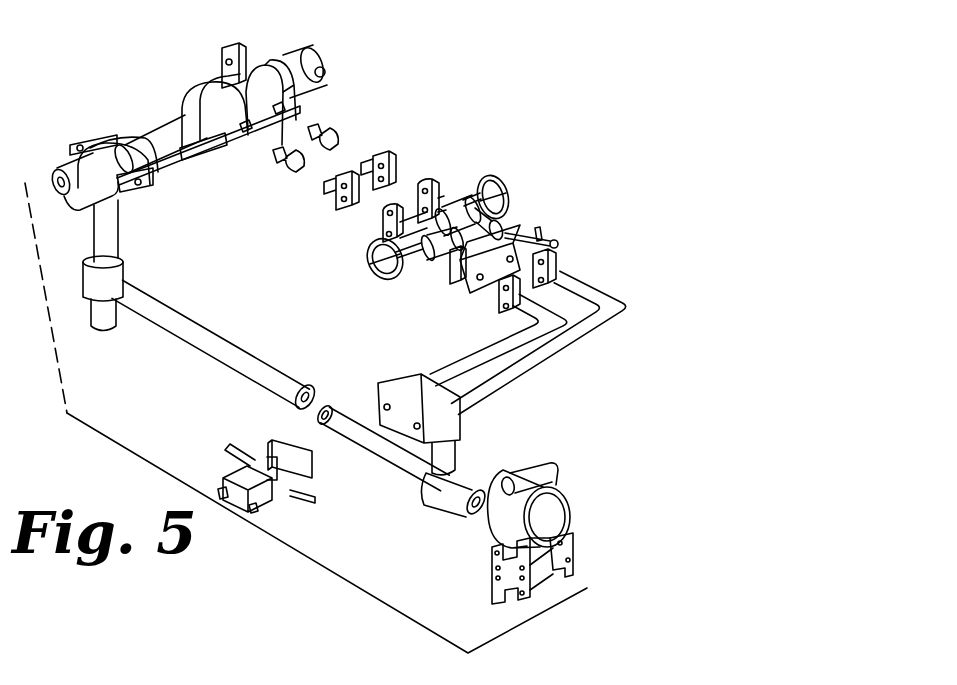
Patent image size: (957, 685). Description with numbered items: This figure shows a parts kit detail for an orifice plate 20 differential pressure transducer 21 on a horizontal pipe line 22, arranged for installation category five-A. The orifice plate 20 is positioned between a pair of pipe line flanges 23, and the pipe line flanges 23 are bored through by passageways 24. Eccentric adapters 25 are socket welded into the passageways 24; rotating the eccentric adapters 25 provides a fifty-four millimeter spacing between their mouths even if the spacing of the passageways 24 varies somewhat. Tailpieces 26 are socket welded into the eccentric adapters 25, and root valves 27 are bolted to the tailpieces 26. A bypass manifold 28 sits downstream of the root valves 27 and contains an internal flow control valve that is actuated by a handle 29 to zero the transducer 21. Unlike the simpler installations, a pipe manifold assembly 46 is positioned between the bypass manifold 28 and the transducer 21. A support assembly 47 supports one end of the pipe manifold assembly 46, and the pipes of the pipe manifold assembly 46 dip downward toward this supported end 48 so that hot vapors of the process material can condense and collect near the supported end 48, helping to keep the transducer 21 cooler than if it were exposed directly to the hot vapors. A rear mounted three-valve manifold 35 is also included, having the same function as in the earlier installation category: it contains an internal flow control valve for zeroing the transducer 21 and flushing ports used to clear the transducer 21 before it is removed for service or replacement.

The orifice plate 20 is at (227, 43).
The differential pressure transducer 21 is at (557, 473).
The horizontal pipe line 22 is at (193, 140).
The pipe line flanges 23 is at (222, 87).
The passageways 24 is at (275, 112).
The eccentric adapters 25 is at (337, 132).
The tailpieces 26 is at (392, 153).
The root valves 27 is at (453, 210).
The bypass manifold 28 is at (463, 287).
The handle 29 is at (548, 243).
The rear mounted three-valve manifold 35 is at (273, 503).
The pipe manifold assembly 46 is at (460, 367).
The support assembly 47 is at (112, 240).
The supported end 48 is at (443, 415).